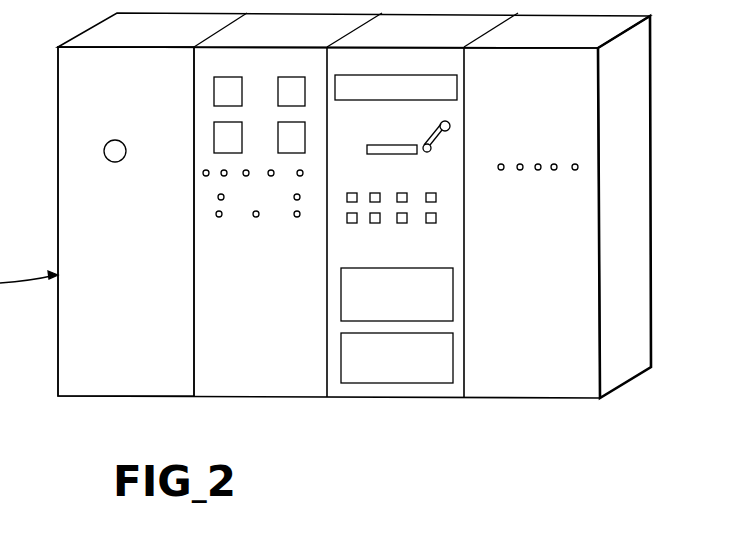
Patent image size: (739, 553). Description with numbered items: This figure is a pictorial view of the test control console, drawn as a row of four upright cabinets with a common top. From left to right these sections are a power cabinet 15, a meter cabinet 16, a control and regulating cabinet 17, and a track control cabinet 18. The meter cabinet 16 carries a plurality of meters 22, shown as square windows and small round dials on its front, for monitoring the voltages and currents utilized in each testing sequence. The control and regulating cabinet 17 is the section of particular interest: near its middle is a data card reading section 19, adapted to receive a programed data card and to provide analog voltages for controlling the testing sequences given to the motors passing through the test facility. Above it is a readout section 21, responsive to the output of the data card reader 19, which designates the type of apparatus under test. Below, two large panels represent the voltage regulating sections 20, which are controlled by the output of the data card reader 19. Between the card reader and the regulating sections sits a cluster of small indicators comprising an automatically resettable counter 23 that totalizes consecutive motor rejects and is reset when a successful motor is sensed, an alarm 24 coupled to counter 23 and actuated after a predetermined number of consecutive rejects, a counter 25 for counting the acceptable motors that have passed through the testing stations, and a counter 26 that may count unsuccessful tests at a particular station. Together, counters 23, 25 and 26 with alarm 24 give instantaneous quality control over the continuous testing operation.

The power cabinet 15 is at (136, 383).
The meter cabinet 16 is at (277, 383).
The control and regulating cabinet 17 is at (407, 390).
The track control cabinet 18 is at (533, 390).
The data card reading section 19 is at (378, 147).
The voltage regulating sections 20 is at (438, 348).
The readout section 21 is at (435, 90).
The meters 22 is at (204, 116).
The automatically resettable counter 23 is at (352, 223).
The alarm 24 is at (359, 172).
The counter 25 is at (375, 223).
The counter 26 is at (403, 223).